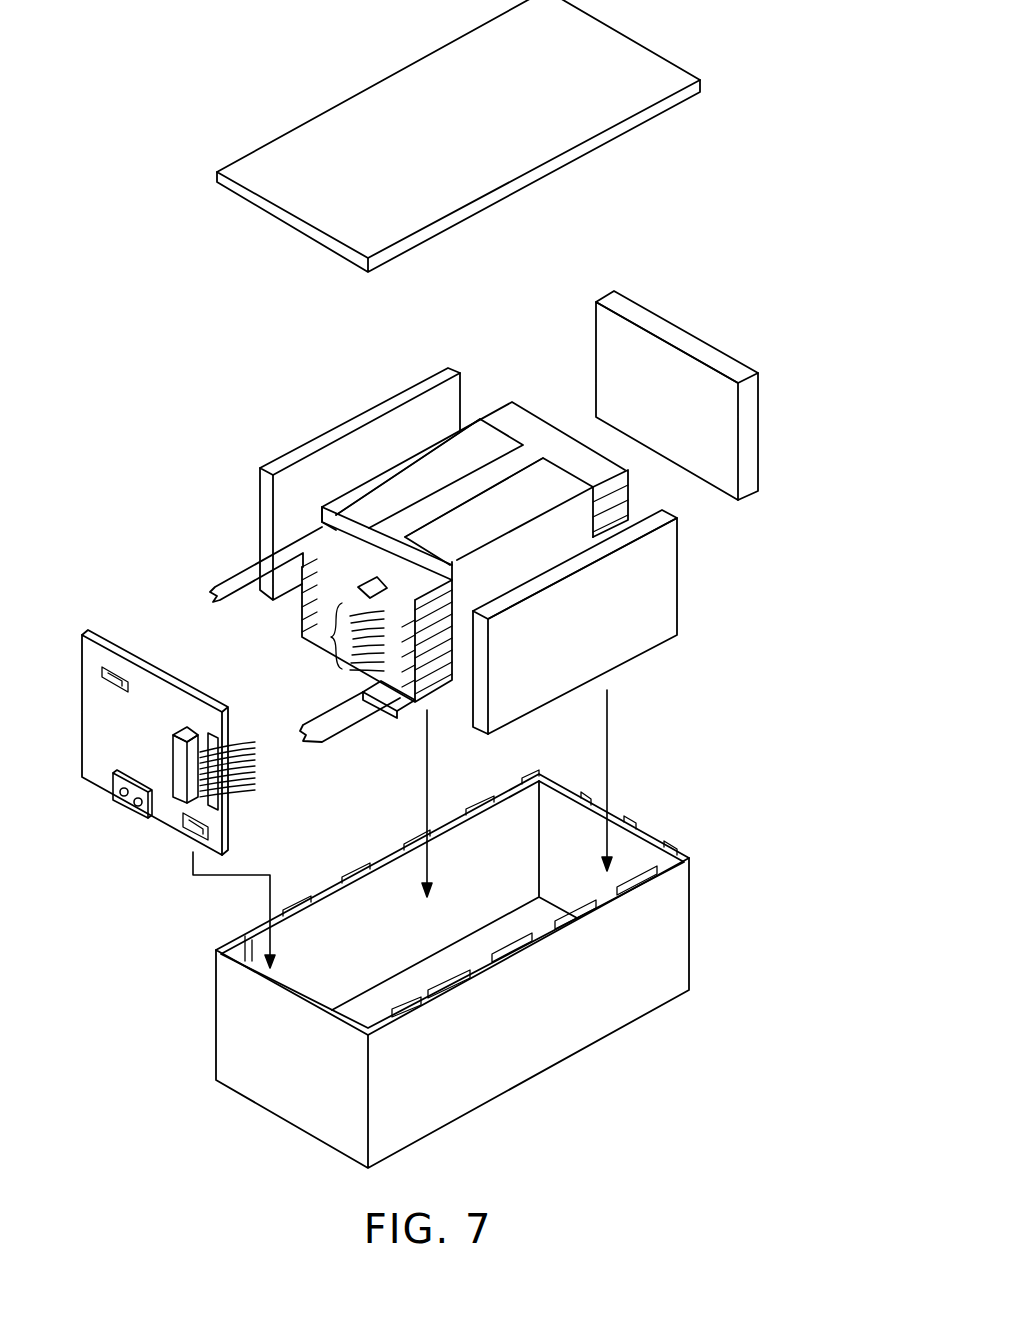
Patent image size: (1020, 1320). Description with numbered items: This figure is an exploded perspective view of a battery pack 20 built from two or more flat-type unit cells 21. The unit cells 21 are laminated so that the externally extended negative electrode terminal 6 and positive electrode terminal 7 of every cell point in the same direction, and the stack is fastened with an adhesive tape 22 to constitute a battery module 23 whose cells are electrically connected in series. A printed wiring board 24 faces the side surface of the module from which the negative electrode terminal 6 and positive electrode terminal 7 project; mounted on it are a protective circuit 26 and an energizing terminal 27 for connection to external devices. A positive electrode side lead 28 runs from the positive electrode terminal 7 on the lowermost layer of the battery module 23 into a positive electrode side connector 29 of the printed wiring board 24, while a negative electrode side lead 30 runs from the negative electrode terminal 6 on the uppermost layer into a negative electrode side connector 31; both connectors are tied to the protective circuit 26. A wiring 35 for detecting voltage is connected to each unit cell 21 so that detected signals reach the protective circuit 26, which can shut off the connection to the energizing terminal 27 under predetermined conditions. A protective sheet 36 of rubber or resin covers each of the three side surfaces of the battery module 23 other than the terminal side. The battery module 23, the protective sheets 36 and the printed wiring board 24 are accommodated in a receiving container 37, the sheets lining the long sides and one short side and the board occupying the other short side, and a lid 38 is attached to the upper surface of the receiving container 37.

The negative electrode terminal 6 is at (318, 533).
The positive electrode terminal 7 is at (392, 580).
The battery pack 20 is at (116, 153).
The unit cell 21 is at (628, 475).
The adhesive tape 22 is at (535, 487).
The battery module 23 is at (405, 450).
The printed wiring board 24 is at (111, 633).
The protective circuit 26 is at (187, 732).
The energizing terminal 27 is at (138, 810).
The positive electrode side lead 28 is at (340, 726).
The positive electrode side connector 29 is at (210, 830).
The negative electrode side lead 30 is at (222, 576).
The negative electrode side connector 31 is at (117, 675).
The wiring for detecting voltage 35 is at (333, 637).
The protective sheet 36 is at (325, 443).
The receiving container 37 is at (681, 933).
The lid 38 is at (642, 66).